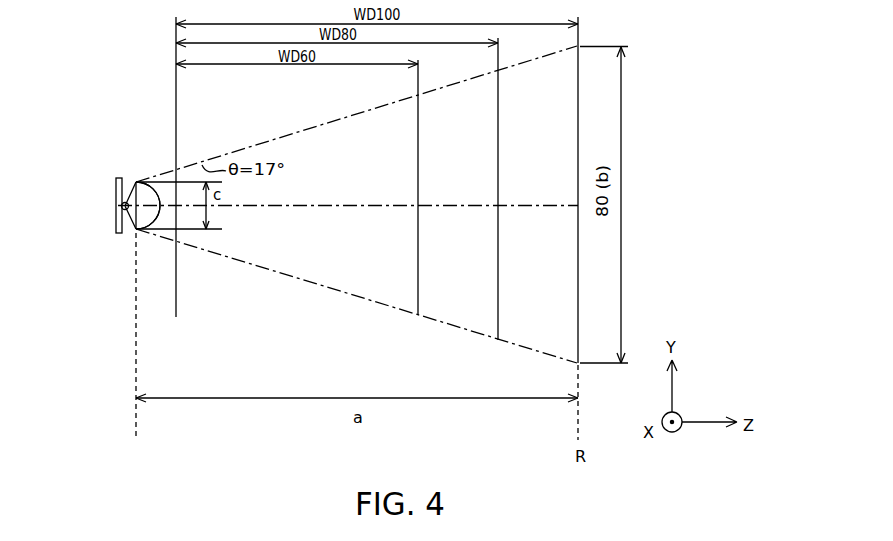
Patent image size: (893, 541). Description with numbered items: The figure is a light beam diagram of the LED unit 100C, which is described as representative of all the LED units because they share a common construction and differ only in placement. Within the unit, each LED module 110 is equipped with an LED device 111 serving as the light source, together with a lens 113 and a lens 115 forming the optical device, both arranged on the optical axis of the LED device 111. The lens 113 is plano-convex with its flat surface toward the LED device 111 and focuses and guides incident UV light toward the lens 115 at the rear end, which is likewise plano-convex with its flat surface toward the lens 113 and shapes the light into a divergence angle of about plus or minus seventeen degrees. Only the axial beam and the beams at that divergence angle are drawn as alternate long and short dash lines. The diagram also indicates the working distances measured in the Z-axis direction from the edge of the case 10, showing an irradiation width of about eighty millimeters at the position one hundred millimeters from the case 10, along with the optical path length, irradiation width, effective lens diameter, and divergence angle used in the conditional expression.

The case 10 is at (175, 288).
The LED module 110 is at (156, 61).
The LED device 111 is at (118, 180).
The lens 113 is at (136, 183).
The lens 115 is at (142, 182).
The LED unit 100C is at (122, 210).